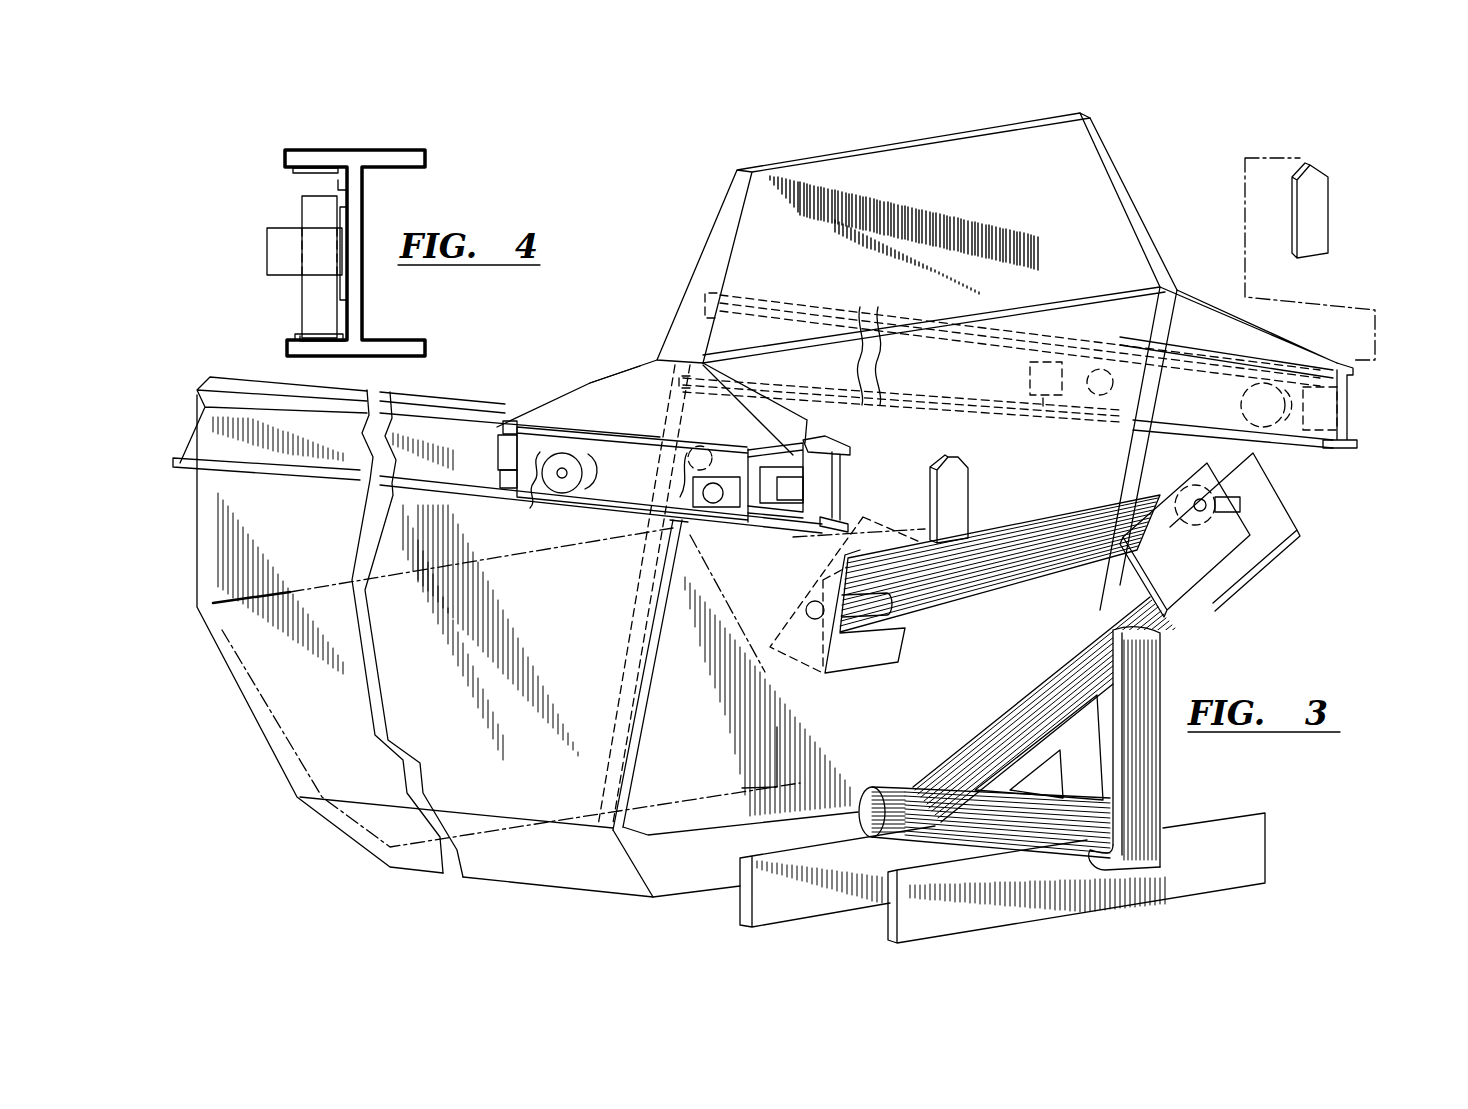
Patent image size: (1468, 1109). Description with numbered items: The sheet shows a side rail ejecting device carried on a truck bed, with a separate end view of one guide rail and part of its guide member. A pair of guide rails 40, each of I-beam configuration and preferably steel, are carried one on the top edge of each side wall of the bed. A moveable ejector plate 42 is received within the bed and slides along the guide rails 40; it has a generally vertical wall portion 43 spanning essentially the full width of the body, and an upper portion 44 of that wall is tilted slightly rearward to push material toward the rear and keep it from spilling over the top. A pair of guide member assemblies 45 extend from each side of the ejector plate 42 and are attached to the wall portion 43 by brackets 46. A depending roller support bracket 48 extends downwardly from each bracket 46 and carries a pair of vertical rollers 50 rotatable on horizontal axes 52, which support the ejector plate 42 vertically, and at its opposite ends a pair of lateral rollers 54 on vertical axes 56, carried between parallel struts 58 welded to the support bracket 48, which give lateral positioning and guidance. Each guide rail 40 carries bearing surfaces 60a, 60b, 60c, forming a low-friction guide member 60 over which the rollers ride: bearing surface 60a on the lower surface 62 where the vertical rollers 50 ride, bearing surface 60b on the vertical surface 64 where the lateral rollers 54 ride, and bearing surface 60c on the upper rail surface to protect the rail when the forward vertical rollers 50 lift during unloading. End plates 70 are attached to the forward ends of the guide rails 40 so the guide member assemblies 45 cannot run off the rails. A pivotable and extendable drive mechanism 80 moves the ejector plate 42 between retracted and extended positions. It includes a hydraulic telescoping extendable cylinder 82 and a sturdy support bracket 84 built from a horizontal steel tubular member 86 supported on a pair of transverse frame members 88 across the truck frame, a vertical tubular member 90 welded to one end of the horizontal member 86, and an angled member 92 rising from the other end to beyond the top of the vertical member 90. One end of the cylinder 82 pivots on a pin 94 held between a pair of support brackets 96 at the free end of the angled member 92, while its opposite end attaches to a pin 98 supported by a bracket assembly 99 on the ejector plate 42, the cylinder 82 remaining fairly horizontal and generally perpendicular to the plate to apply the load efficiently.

In FIG. 4, the guide rail 40 is at (380, 150).
In FIG. 3, the guide rail 40 is at (205, 372).
In FIG. 3, the ejector plate 42 is at (1130, 160).
In FIG. 3, the vertical wall portion 43 is at (950, 690).
In FIG. 3, the upper portion 44 is at (1010, 155).
In FIG. 3, the guide member assembly 45 is at (1232, 300).
In FIG. 3, the bracket 46 is at (603, 393).
In FIG. 3, the roller support bracket 48 is at (518, 488).
In FIG. 4, the vertical roller 50 is at (302, 205).
In FIG. 3, the vertical roller 50 is at (560, 508).
In FIG. 3, the horizontal axis 52 is at (560, 475).
In FIG. 4, the lateral roller 54 is at (267, 248).
In FIG. 3, the lateral roller 54 is at (498, 450).
In FIG. 3, the vertical axis 56 is at (1043, 410).
In FIG. 3, the strut 58 is at (510, 440).
In FIG. 4, the guide member 60 is at (328, 213).
In FIG. 4, the bearing surface 60a is at (297, 337).
In FIG. 4, the bearing surface 60b is at (348, 212).
In FIG. 4, the bearing surface 60c is at (293, 168).
In FIG. 4, the lower surface 62 is at (300, 340).
In FIG. 4, the vertical surface 64 is at (338, 188).
In FIG. 3, the end plate 70 is at (1318, 190).
In FIG. 3, the drive mechanism 80 is at (1187, 595).
In FIG. 3, the extendable cylinder 82 is at (1025, 588).
In FIG. 3, the support bracket 84 is at (1172, 774).
In FIG. 3, the horizontal tubular member 86 is at (1103, 850).
In FIG. 3, the transverse frame member 88 is at (745, 905).
In FIG. 3, the vertical tubular member 90 is at (1163, 795).
In FIG. 3, the angled member 92 is at (1000, 705).
In FIG. 3, the pin 94 is at (1265, 553).
In FIG. 3, the support bracket 96 is at (1235, 575).
In FIG. 3, the pin 98 is at (841, 683).
In FIG. 3, the bracket assembly 99 is at (780, 588).